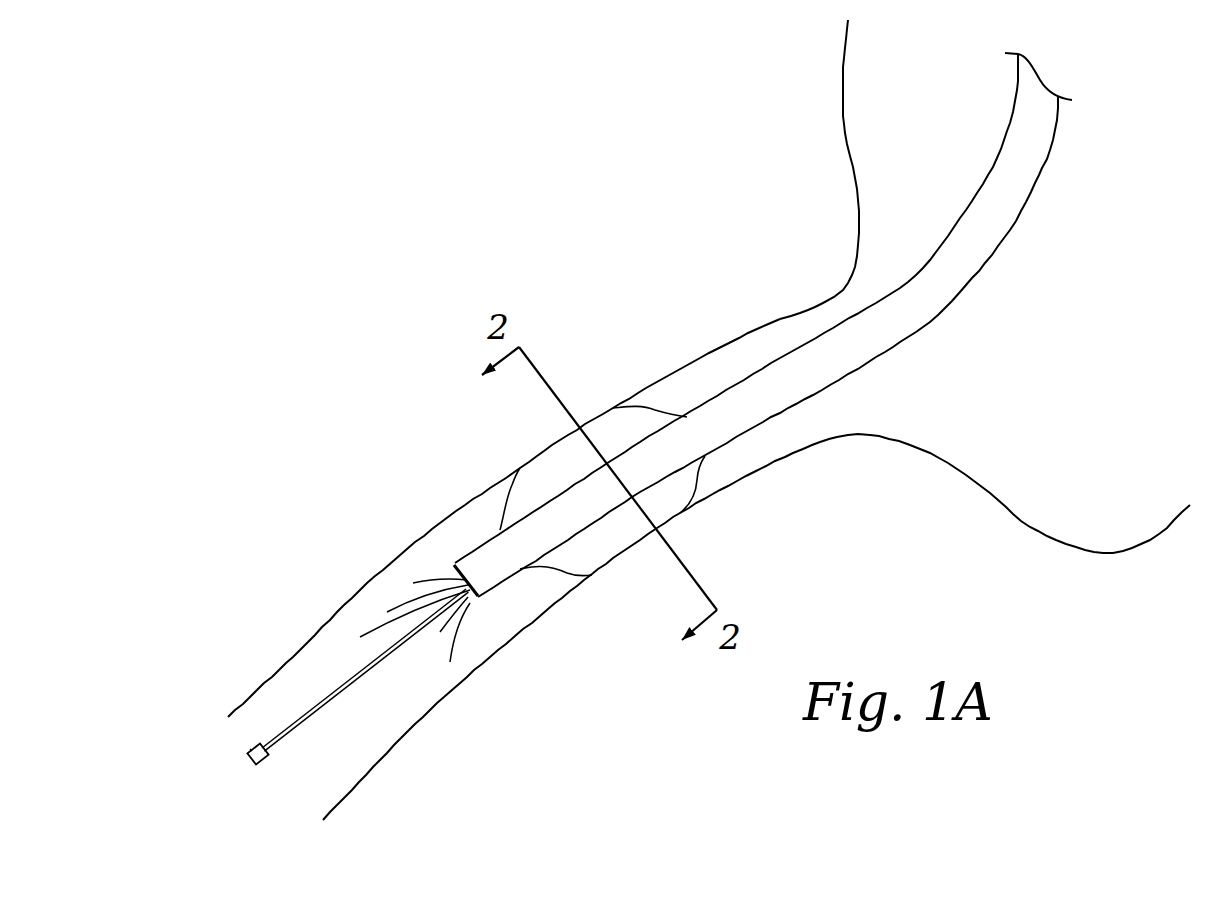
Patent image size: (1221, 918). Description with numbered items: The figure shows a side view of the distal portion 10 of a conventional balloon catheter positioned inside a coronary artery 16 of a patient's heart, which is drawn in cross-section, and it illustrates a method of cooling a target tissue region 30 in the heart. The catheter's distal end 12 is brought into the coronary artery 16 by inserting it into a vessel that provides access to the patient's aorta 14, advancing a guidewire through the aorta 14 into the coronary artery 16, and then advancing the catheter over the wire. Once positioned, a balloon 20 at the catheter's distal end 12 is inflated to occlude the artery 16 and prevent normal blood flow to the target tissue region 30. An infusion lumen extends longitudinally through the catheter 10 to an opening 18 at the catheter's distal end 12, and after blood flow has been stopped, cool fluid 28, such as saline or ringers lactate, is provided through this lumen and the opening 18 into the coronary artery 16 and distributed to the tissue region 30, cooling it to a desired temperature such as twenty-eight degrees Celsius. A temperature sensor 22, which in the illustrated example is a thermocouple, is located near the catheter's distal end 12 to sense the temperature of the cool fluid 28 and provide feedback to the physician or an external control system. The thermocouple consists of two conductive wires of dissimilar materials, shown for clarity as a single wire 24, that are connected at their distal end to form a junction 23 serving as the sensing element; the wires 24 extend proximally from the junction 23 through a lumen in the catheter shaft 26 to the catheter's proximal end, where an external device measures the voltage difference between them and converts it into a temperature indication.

The distal portion of balloon catheter 10 is at (768, 358).
The catheter's distal end 12 is at (525, 457).
The aorta 14 is at (877, 125).
The coronary artery 16 is at (475, 497).
The opening 18 is at (452, 565).
The balloon 20 is at (643, 407).
The temperature sensor 22 is at (245, 780).
The junction 23 is at (259, 765).
The wires 24 is at (318, 710).
The catheter shaft 26 is at (845, 375).
The cool fluid 28 is at (463, 635).
The target tissue region 30 is at (235, 675).